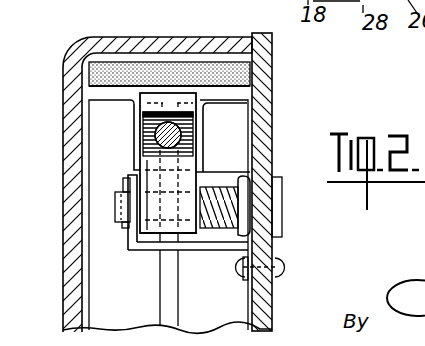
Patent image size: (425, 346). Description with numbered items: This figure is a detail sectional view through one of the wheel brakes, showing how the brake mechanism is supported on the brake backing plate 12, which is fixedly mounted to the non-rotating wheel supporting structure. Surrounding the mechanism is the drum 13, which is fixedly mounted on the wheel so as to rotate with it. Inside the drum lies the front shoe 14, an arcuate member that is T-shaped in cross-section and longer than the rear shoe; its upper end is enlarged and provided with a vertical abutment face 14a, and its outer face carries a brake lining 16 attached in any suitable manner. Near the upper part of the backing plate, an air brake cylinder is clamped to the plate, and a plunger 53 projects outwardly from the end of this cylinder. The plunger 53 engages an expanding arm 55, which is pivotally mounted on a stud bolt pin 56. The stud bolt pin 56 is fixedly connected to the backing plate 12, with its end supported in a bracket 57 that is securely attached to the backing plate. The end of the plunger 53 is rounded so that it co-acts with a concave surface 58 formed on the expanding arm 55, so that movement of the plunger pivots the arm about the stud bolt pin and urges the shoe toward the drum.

The brake backing plate 12 is at (262, 96).
The drum 13 is at (72, 156).
The front shoe 14 is at (107, 265).
The vertical abutment face 14a is at (137, 128).
The brake lining 16 is at (133, 75).
The plunger 53 is at (184, 140).
The expanding arm 55 is at (185, 180).
The stud bolt pin 56 is at (116, 205).
The bracket 57 is at (140, 245).
The concave surface 58 is at (185, 117).